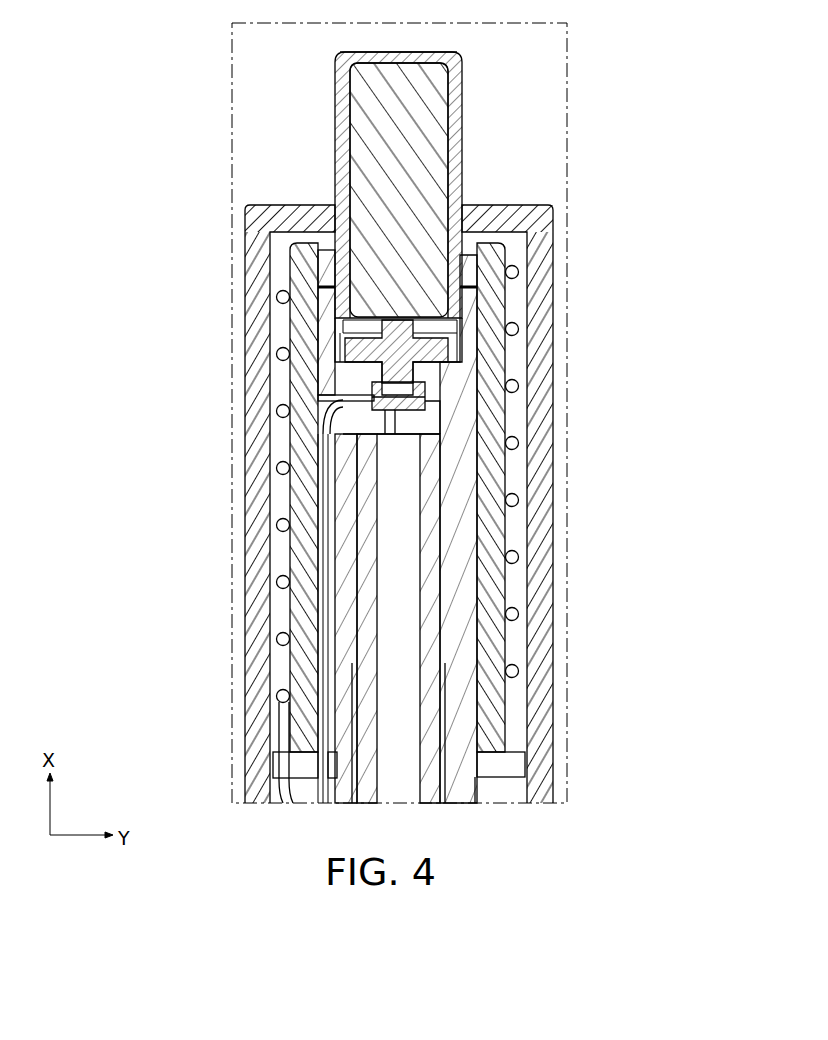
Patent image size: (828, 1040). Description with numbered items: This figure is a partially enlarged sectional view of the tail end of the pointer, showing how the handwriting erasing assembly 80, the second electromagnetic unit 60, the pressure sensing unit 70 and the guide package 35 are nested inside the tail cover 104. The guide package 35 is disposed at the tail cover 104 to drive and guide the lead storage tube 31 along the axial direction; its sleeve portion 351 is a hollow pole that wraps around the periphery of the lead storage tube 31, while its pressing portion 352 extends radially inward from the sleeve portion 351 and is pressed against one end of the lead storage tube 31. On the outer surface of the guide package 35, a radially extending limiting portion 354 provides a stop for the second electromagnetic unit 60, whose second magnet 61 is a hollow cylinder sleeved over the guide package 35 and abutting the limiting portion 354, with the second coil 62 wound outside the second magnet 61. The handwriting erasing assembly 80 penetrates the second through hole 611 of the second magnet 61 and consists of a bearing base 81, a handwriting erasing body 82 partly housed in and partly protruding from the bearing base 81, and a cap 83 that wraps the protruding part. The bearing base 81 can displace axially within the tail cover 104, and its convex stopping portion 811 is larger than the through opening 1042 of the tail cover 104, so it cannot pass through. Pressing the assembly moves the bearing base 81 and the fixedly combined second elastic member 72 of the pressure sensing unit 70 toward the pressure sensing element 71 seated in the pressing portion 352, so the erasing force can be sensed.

The through opening 1042 is at (312, 222).
The handwriting erasing assembly 80 is at (518, 217).
The bearing base 81 is at (448, 186).
The handwriting erasing body 82 is at (419, 127).
The cap 83 is at (452, 73).
The convex stopping portion 811 is at (495, 311).
The pressure sensing unit 70 is at (276, 367).
The pressure sensing element 71 is at (395, 393).
The second elastic member 72 is at (383, 328).
The pressing portion 352 is at (410, 422).
The guide package 35 is at (345, 700).
The sleeve portion 351 is at (460, 473).
The limiting portion 354 is at (510, 765).
The lead storage tube 31 is at (428, 522).
The second electromagnetic unit 60 is at (312, 497).
The second magnet 61 is at (310, 630).
The second coil 62 is at (284, 582).
The second through hole 611 is at (322, 520).
The tail cover 104 is at (273, 760).